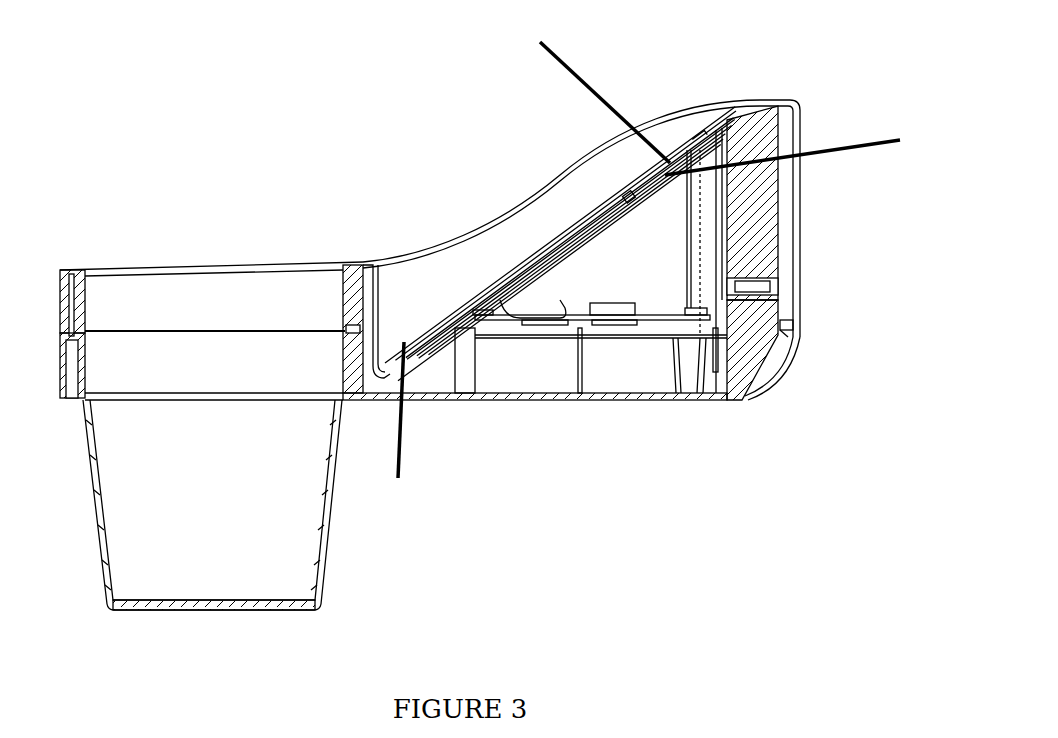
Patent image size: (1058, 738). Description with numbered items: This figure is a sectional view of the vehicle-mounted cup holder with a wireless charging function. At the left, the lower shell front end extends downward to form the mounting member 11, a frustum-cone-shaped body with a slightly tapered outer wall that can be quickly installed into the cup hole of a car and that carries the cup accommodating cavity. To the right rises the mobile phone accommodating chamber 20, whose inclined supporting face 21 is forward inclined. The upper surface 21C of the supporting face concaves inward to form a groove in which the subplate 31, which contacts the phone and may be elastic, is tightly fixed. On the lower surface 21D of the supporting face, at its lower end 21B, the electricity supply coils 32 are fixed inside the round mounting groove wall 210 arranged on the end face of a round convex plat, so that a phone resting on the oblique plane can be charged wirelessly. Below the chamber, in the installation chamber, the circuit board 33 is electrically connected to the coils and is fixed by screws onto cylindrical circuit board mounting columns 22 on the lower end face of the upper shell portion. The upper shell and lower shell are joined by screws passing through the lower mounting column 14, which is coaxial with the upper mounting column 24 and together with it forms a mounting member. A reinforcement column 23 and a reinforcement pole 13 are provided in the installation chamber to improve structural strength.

The mounting member 11 is at (327, 520).
The reinforcement pole 13 is at (755, 337).
The lower mounting column 14 is at (465, 368).
The cover assembly 20 is at (447, 282).
The inclined supporting face 21 is at (742, 110).
The lower end of the supporting face 21B is at (412, 428).
The upper surface of the supporting face 21C is at (595, 90).
The lower surface of the supporting face 21D is at (804, 148).
The circuit board mounting column 22 is at (692, 272).
The reinforcement column 23 is at (765, 218).
The upper mounting column 24 is at (390, 265).
The subplate 31 is at (700, 145).
The electricity supply coils 32 is at (592, 203).
The circuit board 33 is at (610, 320).
The round mounting groove wall 210 is at (622, 190).